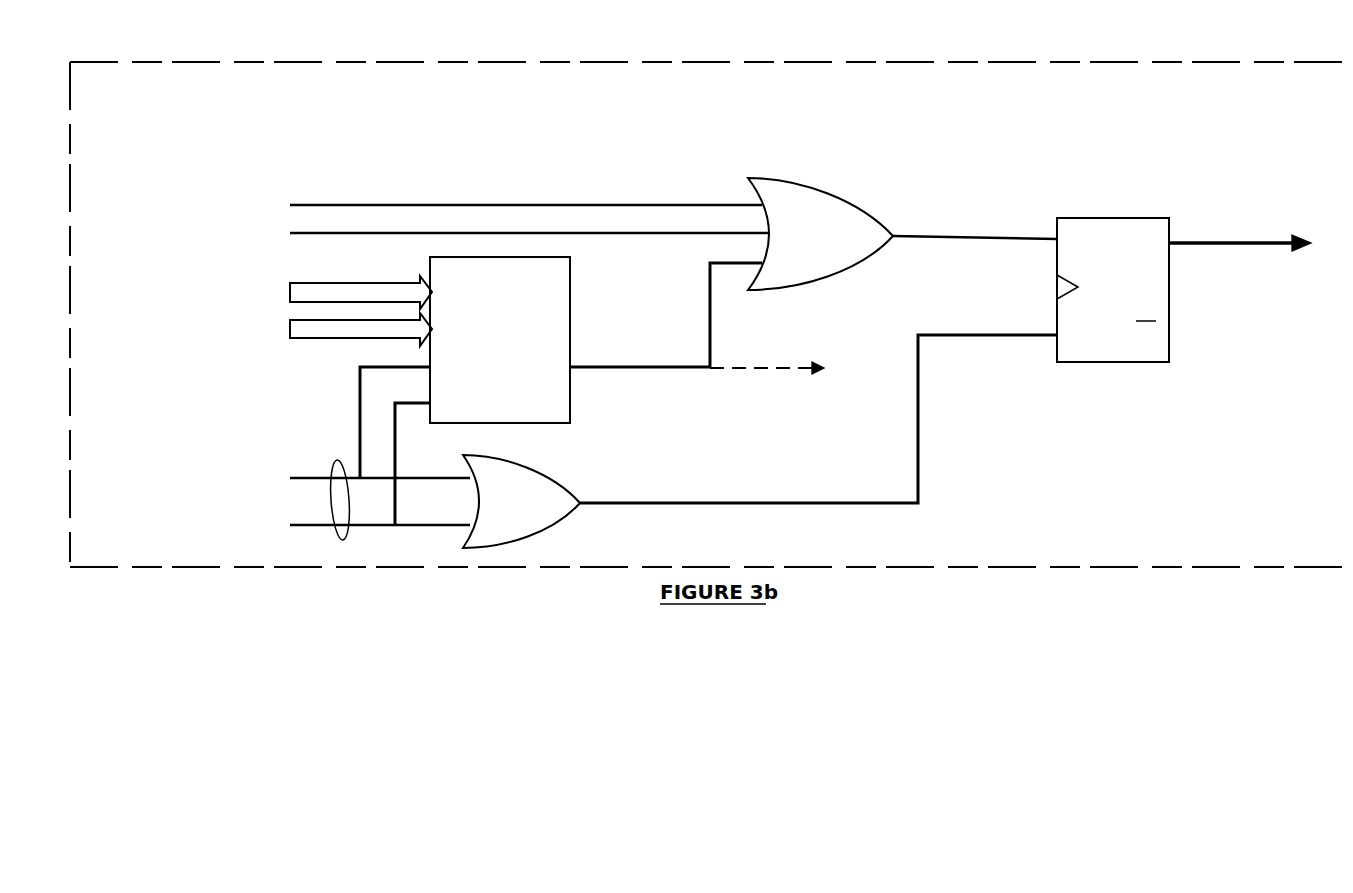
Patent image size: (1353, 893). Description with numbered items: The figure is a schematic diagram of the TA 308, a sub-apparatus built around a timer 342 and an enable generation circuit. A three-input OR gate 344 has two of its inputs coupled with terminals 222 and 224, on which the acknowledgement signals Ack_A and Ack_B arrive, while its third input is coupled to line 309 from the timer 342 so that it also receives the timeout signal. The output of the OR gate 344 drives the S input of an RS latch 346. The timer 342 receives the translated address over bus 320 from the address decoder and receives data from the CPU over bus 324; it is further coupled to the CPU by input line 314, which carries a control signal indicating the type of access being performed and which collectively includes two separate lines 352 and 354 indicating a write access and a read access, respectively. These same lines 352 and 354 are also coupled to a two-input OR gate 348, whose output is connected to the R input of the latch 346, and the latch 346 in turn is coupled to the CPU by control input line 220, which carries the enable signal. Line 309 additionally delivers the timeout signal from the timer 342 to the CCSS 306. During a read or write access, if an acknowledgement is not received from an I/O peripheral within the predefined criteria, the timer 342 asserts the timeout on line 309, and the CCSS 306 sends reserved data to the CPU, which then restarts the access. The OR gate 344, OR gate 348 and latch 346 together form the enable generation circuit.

The TA 308 is at (70, 78).
The terminal 222 is at (326, 204).
The terminal 224 is at (338, 236).
The bus 320 is at (330, 284).
The bus 324 is at (343, 338).
The timer 342 is at (570, 283).
The line 352 is at (323, 472).
The line 354 is at (332, 535).
The input line 314 is at (344, 540).
The line 309 is at (670, 370).
The CCSS 306 is at (791, 361).
The 3-input OR gate 344 is at (865, 202).
The 2-input OR gate 348 is at (568, 522).
The RS latch 346 is at (1110, 217).
The control input line 220 is at (1218, 246).